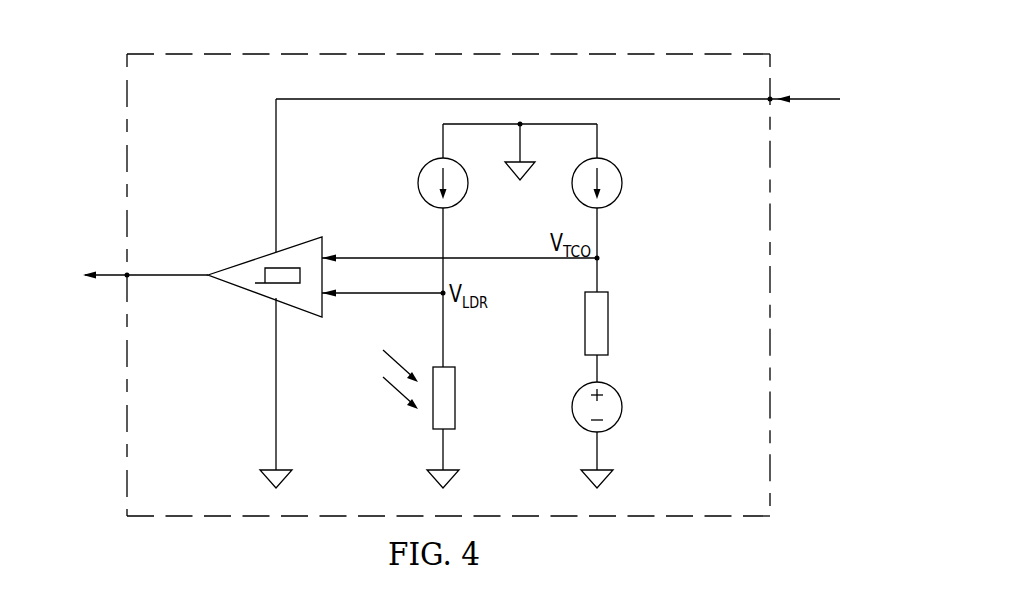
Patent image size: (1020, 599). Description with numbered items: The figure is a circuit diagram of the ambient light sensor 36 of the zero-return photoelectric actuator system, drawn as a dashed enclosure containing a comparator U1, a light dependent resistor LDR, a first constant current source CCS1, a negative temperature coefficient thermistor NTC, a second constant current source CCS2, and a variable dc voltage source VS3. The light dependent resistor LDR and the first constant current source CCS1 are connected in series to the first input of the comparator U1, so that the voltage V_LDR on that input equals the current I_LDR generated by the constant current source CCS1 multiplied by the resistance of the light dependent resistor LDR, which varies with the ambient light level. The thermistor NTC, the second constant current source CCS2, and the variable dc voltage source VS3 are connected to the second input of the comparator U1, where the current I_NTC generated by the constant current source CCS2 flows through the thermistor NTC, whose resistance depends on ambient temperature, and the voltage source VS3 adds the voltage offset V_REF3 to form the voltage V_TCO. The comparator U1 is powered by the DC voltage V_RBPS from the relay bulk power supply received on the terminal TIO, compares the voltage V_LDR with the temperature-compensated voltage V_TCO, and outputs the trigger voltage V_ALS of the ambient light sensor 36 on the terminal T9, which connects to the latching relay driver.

The ambient light sensor 36 is at (792, 29).
The terminal T10 TIO is at (588, 99).
The first constant current source CCS1 is at (427, 161).
The second constant current source CCS2 is at (612, 161).
The light dependent resistor LDR is at (439, 348).
The negative temperature coefficient thermistor NTC is at (614, 295).
The variable dc voltage source VS3 is at (616, 389).
The comparator U1 is at (262, 259).
The terminal T9 is at (123, 279).